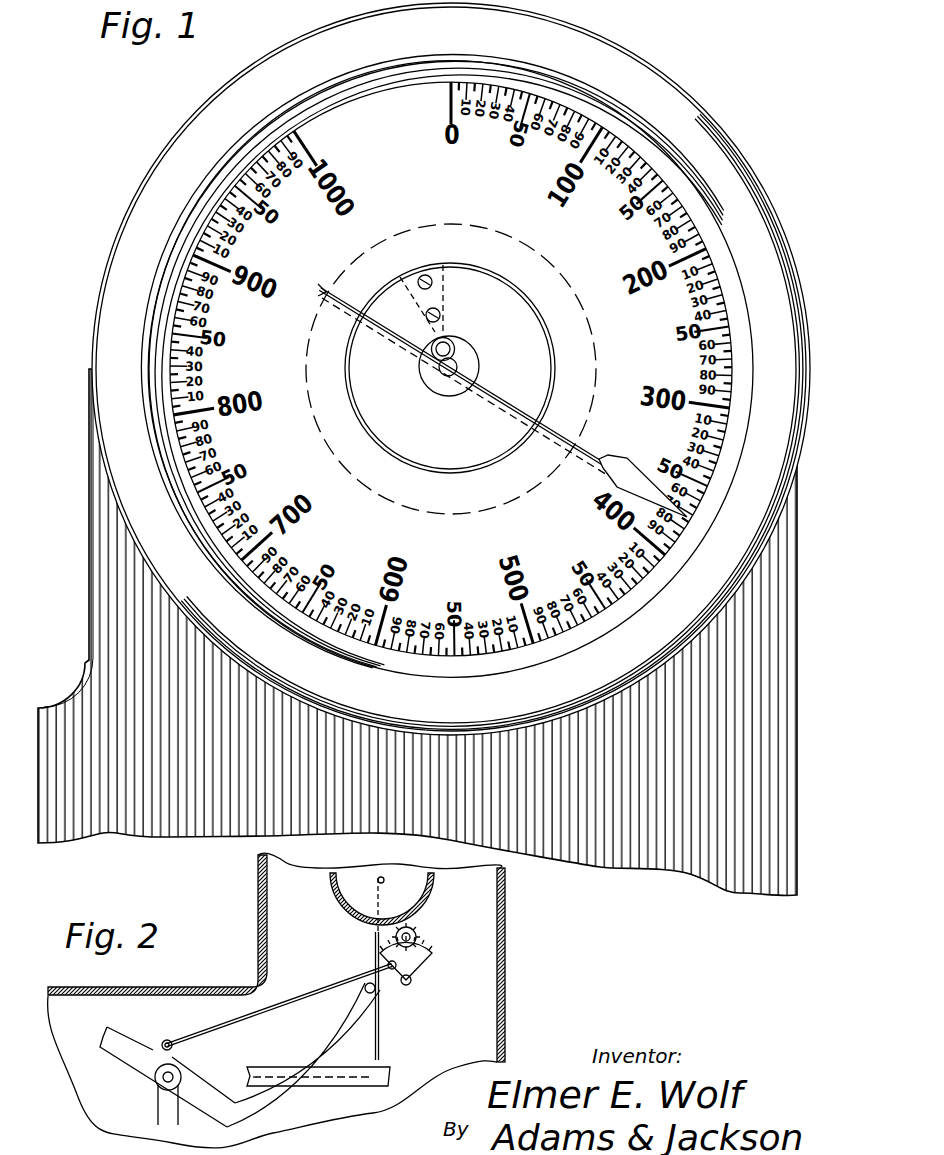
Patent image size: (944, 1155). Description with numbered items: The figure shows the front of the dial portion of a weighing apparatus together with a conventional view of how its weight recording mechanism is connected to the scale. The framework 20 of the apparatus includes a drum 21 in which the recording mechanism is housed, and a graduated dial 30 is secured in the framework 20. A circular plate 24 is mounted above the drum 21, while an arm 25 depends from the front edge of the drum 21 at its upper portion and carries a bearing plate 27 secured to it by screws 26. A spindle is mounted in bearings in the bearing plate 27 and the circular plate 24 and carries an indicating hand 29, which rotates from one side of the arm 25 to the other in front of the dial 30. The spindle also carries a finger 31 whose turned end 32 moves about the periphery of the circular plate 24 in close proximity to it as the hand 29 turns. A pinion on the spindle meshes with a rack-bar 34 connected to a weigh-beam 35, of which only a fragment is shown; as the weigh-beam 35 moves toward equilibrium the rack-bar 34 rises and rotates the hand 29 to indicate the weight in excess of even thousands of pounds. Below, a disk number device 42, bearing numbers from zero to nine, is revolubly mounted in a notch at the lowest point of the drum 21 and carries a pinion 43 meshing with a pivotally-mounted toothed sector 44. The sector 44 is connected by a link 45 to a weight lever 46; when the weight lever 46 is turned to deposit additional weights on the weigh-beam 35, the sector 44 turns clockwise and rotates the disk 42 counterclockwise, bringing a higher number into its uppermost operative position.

In FIG. 2, the framework 20 is at (506, 950).
In FIG. 2, the drum 21 is at (431, 905).
In FIG. 1, the circular plate 24 is at (310, 410).
In FIG. 1, the arm 25 is at (443, 297).
In FIG. 1, the screws 26 is at (420, 288).
In FIG. 1, the bearing plate 27 is at (410, 455).
In FIG. 1, the indicating hand 29 is at (598, 457).
In FIG. 1, the dial 30 is at (338, 110).
In FIG. 1, the finger 31 is at (393, 295).
In FIG. 1, the turned end 32 is at (325, 290).
In FIG. 2, the rack-bar 34 is at (374, 947).
In FIG. 2, the weigh-beam 35 is at (333, 1086).
In FIG. 2, the disk number device 42 is at (420, 936).
In FIG. 2, the pinion 43 is at (405, 927).
In FIG. 2, the toothed sector 44 is at (424, 963).
In FIG. 2, the link 45 is at (258, 1017).
In FIG. 2, the weight lever 46 is at (133, 1058).